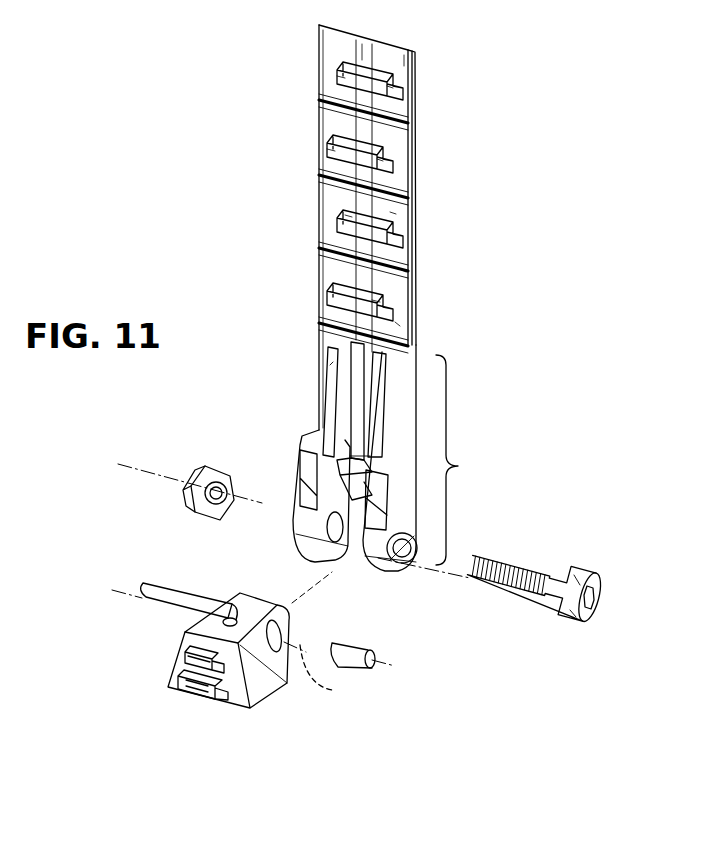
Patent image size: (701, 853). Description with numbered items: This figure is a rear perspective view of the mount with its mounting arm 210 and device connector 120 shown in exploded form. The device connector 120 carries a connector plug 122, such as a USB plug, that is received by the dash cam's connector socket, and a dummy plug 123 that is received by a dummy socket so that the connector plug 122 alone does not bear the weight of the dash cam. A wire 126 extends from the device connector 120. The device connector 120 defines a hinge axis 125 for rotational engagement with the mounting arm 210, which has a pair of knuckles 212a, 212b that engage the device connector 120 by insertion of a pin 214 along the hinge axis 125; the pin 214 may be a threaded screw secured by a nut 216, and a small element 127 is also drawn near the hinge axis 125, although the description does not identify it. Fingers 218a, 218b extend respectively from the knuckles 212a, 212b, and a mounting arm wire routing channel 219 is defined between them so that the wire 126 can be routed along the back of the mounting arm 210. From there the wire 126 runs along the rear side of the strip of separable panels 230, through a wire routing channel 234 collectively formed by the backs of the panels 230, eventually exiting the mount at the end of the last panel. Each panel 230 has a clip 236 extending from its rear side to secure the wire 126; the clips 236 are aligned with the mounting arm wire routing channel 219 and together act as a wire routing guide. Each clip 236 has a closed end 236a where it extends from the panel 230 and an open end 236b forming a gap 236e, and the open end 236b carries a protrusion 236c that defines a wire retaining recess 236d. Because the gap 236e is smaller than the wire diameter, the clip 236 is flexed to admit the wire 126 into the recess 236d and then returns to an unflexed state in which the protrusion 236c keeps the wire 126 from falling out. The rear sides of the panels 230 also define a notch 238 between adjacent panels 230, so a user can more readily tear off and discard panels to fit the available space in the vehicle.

The device connector 120 is at (268, 690).
The connector plug 122 is at (195, 652).
The dummy plug 123 is at (222, 705).
The hinge axis 125 is at (334, 677).
The wire 126 is at (178, 598).
The pin 127 is at (362, 648).
The mounting arm 210 is at (475, 460).
The knuckle 212a is at (375, 570).
The knuckle 212b is at (300, 553).
The pin 214 is at (530, 563).
The nut 216 is at (216, 468).
The finger 218a is at (370, 388).
The finger 218b is at (332, 372).
The mounting arm wire routing channel 219 is at (358, 348).
The strip of separable panels 230 is at (330, 118).
The wire routing channel 234 is at (370, 52).
The clip 236 is at (378, 153).
The closed end 236a is at (405, 92).
The open end 236b is at (340, 80).
The protrusion 236c is at (345, 215).
The wire retaining recess 236d is at (396, 214).
The gap 236e is at (395, 325).
The notch 238 is at (405, 273).